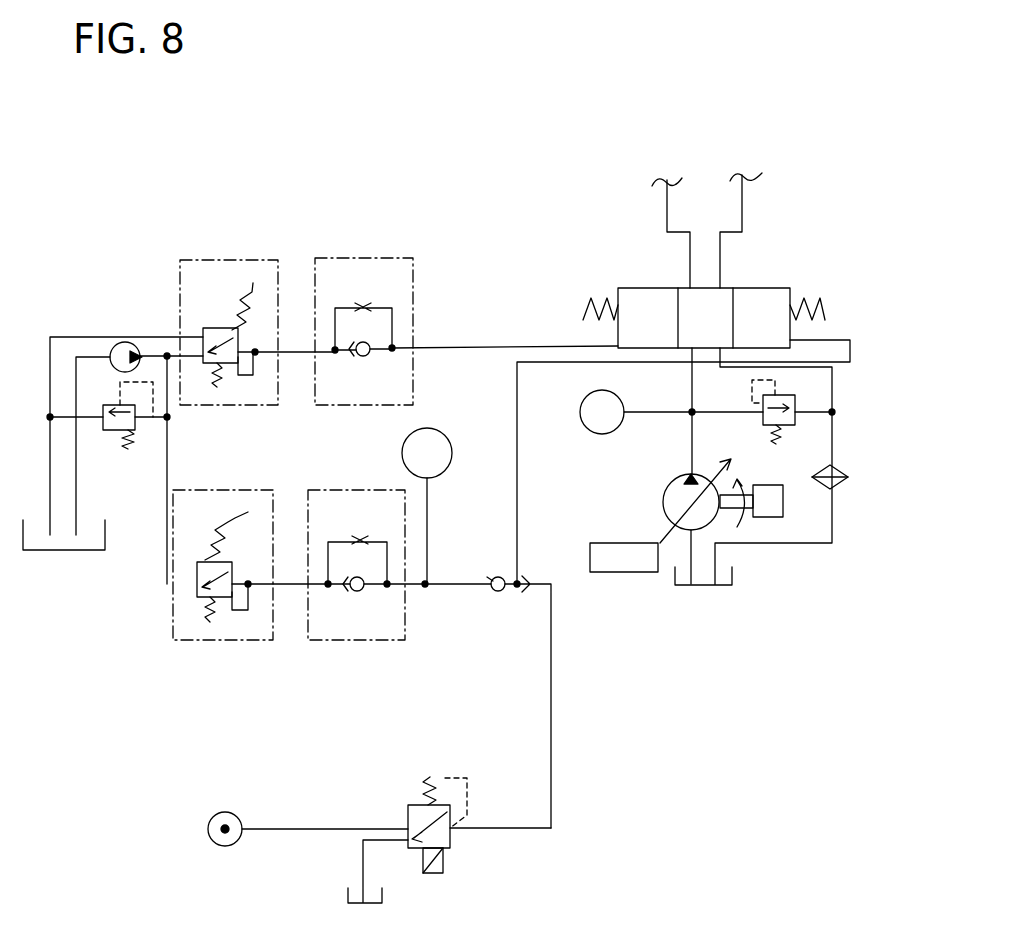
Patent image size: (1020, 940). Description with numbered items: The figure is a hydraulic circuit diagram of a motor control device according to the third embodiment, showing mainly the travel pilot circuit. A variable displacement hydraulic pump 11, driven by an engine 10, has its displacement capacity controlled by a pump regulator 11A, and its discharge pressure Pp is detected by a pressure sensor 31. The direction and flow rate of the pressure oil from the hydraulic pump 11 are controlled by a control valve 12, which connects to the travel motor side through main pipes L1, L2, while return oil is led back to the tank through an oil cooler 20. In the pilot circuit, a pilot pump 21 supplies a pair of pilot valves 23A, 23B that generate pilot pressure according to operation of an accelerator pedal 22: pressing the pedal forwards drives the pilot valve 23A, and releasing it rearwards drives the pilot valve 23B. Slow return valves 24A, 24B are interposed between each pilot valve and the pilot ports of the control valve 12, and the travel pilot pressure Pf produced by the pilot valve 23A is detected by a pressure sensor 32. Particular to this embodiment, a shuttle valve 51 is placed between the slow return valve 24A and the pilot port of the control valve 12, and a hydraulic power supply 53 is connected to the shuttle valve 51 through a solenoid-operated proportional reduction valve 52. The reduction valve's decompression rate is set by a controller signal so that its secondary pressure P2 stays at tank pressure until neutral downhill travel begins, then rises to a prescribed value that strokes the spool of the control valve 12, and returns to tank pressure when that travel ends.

The engine 10 is at (770, 517).
The hydraulic pump 11 is at (660, 512).
The pump regulator 11A is at (632, 572).
The control valve 12 is at (787, 295).
The oil cooler 20 is at (843, 487).
The pilot pump 21 is at (118, 345).
The accelerator pedal 22 is at (220, 312).
The pilot valve 23A is at (190, 640).
The pilot valve 23B is at (197, 407).
The slow return valve 24A is at (335, 640).
The slow return valve 24B is at (320, 405).
The pressure sensor 31 is at (588, 426).
The pressure sensor 32 is at (402, 462).
The shuttle valve 51 is at (510, 598).
The solenoid-operated proportional reduction valve 52 is at (450, 848).
The hydraulic power supply 53 is at (225, 847).
The main pipe L1 is at (667, 193).
The main pipe L2 is at (743, 198).
The secondary pressure P2 is at (551, 788).